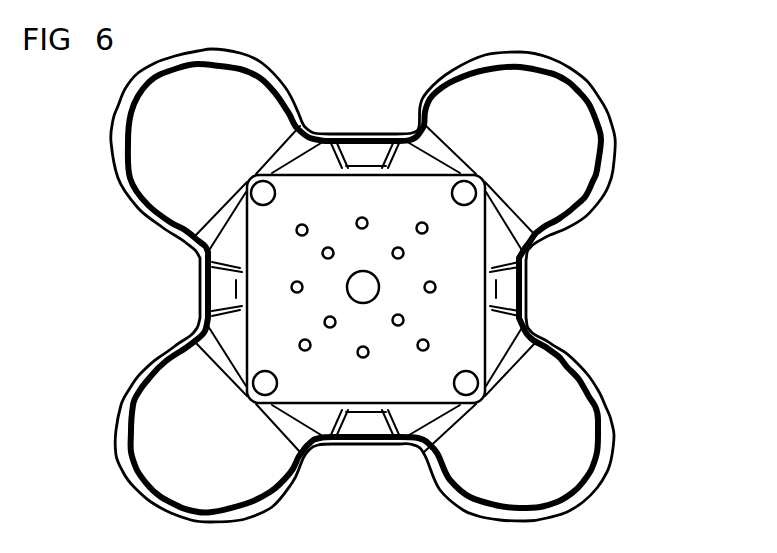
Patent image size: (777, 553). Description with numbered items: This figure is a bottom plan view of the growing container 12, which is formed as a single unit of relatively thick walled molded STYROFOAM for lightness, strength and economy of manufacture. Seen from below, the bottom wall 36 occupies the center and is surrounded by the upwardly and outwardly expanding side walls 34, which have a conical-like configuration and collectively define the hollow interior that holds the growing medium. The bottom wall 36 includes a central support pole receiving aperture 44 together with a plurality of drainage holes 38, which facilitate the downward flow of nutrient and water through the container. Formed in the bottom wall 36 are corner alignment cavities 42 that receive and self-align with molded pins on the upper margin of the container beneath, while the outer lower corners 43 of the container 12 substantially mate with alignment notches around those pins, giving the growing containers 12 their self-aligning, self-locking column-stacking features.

The growing container 12 is at (612, 94).
The side walls 34 is at (559, 130).
The bottom wall 36 is at (394, 362).
The drainage holes 38 is at (404, 317).
The corner alignment cavities 42 is at (477, 373).
The outer lower corners 43 is at (487, 394).
The central support pole receiving aperture 44 is at (380, 284).